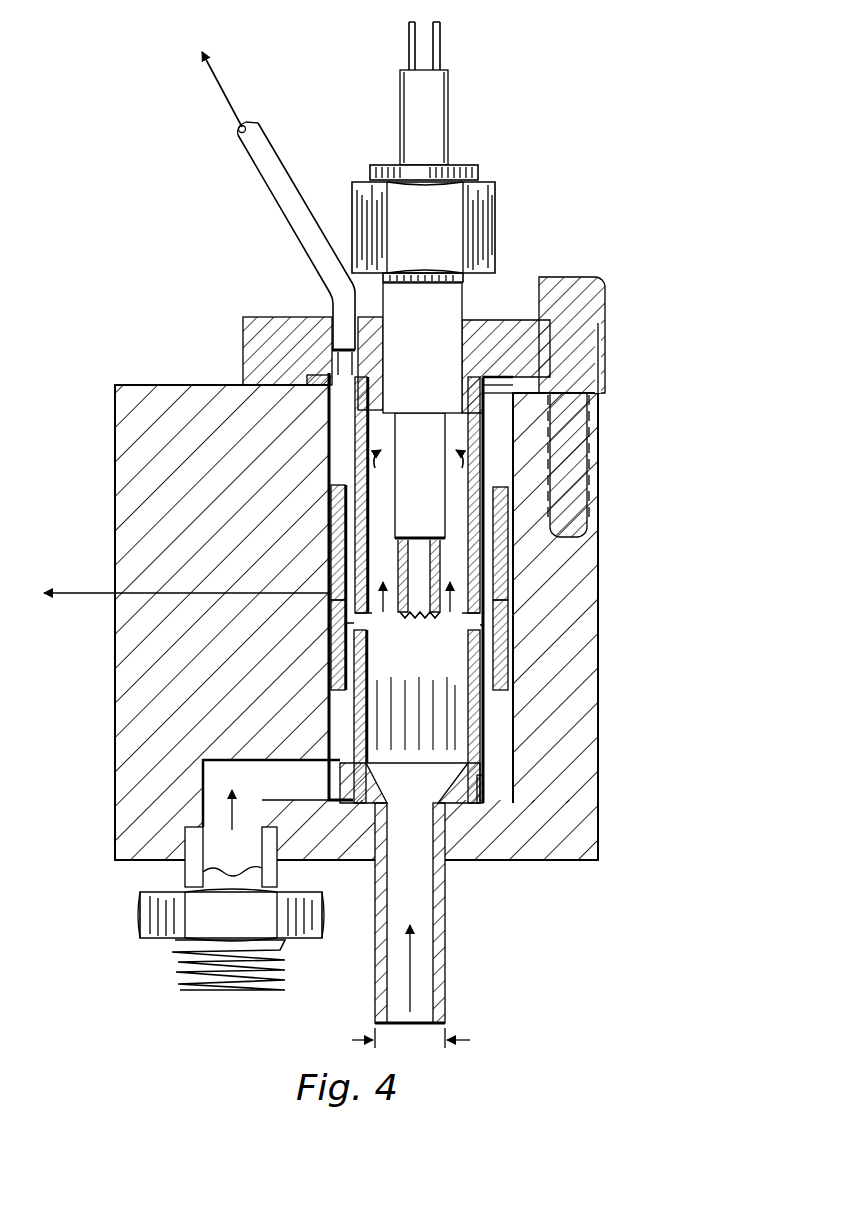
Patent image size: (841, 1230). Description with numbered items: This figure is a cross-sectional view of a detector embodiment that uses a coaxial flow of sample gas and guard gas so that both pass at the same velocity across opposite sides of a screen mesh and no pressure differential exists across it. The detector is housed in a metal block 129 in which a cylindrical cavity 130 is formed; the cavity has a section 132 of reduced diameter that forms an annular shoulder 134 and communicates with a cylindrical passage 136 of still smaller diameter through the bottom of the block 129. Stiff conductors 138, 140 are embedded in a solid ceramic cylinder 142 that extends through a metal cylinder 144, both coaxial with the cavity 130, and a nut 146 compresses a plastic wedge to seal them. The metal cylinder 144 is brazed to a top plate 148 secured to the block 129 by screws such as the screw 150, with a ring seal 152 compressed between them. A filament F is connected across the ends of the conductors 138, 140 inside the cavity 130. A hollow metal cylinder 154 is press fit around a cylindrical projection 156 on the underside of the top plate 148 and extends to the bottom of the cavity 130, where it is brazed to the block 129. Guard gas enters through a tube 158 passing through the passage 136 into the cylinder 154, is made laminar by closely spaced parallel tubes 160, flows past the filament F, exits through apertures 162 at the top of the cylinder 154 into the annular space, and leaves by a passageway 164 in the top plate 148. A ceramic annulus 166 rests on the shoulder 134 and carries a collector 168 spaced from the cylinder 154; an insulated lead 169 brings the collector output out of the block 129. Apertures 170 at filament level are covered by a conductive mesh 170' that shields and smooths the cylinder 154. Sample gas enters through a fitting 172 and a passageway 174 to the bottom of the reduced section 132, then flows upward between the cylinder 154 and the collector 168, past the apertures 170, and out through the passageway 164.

The metal block 129 is at (602, 790).
The cylindrical cavity 130 is at (328, 423).
The reduced-diameter section 132 is at (492, 754).
The annular shoulder 134 is at (498, 688).
The cylindrical passage 136 is at (446, 832).
The stiff conductor 138 is at (410, 42).
The stiff conductor 140 is at (441, 44).
The solid ceramic cylinder 142 is at (455, 86).
The metal cylinder 144 is at (442, 327).
The nut 146 is at (496, 210).
The top plate 148 is at (243, 330).
The screw 150 is at (606, 306).
The ring seal 152 is at (310, 382).
The hollow metal cylinder 154 is at (345, 472).
The cylindrical projection 156 is at (462, 390).
The tube 158 is at (446, 980).
The parallel tubes 160 is at (418, 676).
The apertures 162 is at (346, 438).
The passageway 164 is at (334, 352).
The ceramic annulus 166 is at (332, 499).
The collector 168 is at (330, 661).
The insulated lead 169 is at (86, 579).
The apertures 170 is at (419, 797).
The conductive mesh 170' is at (412, 620).
The fitting 172 is at (142, 907).
The passageway 174 is at (271, 795).